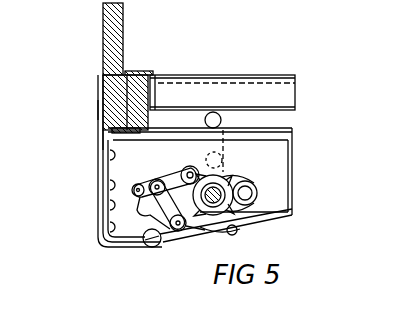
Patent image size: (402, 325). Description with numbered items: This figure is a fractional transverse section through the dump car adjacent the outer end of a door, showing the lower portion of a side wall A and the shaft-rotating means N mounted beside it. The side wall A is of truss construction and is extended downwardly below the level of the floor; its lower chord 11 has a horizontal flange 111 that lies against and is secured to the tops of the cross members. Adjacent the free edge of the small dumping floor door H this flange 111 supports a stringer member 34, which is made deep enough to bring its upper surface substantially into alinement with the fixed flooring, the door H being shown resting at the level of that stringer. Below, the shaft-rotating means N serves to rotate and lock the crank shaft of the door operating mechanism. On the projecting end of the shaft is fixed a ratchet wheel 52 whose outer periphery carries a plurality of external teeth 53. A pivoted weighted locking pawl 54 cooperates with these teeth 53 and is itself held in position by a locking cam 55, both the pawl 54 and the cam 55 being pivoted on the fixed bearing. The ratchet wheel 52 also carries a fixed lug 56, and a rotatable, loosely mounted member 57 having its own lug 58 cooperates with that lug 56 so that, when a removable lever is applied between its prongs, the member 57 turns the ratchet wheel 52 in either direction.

The side wall A is at (113, 30).
The stringer member 34 is at (127, 93).
The small dumping floor door H is at (238, 95).
The shaft-rotating means N is at (145, 247).
The lower chord 11 is at (98, 108).
The horizontal flange 111 is at (100, 138).
The rotatable loosely mounted member 57 is at (183, 172).
The locking cam 55 is at (143, 200).
The fixed lug 56 is at (223, 173).
The ratchet wheel 52 is at (237, 180).
The external teeth 53 is at (247, 223).
The pivoted weighted locking pawl 54 is at (200, 227).
The lug 58 is at (180, 237).